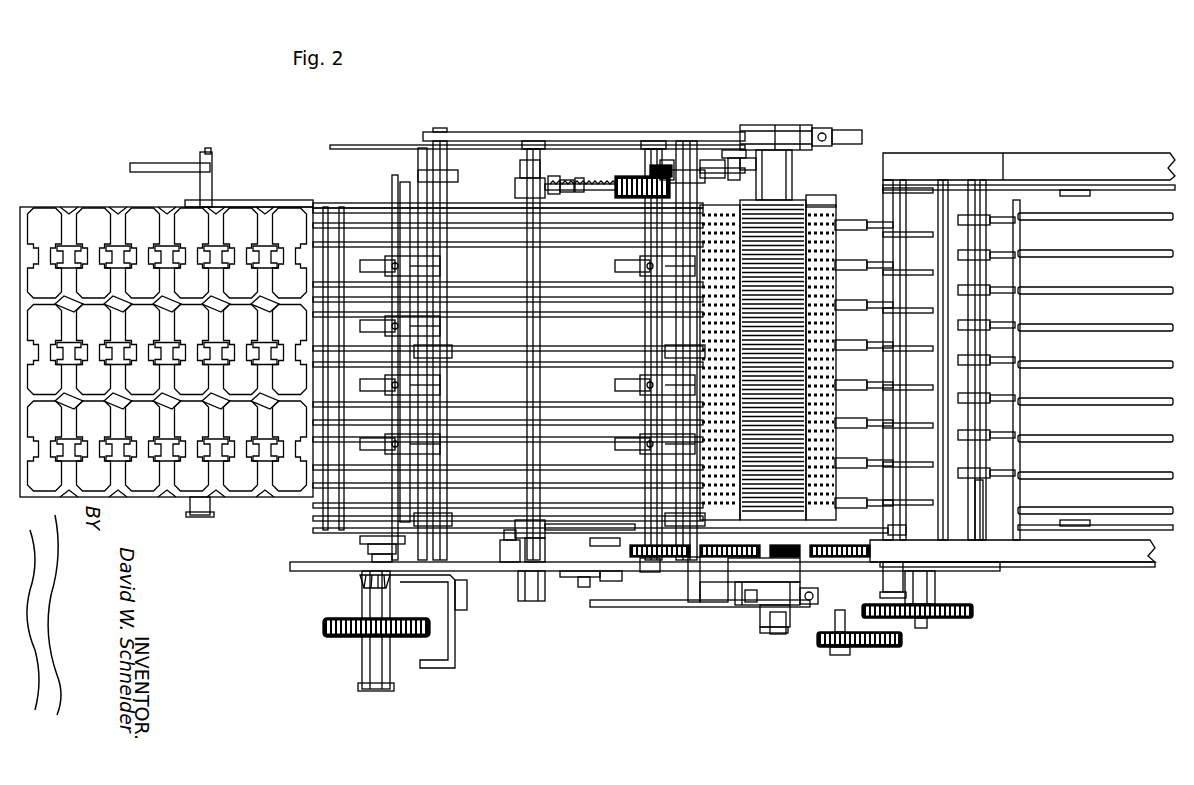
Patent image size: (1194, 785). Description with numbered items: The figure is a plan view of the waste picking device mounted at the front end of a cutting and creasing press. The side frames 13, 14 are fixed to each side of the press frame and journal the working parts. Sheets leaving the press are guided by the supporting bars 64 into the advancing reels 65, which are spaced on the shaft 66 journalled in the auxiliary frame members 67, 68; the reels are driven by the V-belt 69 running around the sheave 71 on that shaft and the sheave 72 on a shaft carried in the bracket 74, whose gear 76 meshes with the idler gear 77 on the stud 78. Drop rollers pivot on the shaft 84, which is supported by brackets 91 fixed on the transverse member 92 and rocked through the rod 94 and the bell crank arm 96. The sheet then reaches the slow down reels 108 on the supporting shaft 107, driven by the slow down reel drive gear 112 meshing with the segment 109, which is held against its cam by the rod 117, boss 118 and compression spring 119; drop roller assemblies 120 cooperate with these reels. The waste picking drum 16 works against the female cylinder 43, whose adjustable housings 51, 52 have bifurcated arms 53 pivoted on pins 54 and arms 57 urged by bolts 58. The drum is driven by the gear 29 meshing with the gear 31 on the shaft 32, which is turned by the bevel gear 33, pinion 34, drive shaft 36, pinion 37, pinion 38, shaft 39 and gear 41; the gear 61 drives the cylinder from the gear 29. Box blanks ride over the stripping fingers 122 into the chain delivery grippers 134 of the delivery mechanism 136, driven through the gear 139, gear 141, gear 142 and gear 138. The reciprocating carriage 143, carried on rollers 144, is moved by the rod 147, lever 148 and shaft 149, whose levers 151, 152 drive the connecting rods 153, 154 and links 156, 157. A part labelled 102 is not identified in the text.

The side frame 13 is at (332, 563).
The side frame 14 is at (478, 132).
The waste picking drum 16 is at (815, 215).
The gear 29 is at (694, 600).
The gear 31 is at (886, 551).
The shaft 32 is at (852, 650).
The bevel gear 33 is at (780, 634).
The pinion 34 is at (772, 634).
The drive shaft 36 is at (698, 604).
The pinion 37 is at (440, 616).
The pinion 38 is at (360, 584).
The shaft 39 is at (358, 604).
The gear 41 is at (332, 640).
The female cylinder 43 is at (838, 198).
The adjustable housing 51 is at (752, 608).
The adjustable housing 52 is at (790, 126).
The bifurcated arms 53 is at (745, 130).
The pins 54 is at (762, 128).
The arms 57 is at (824, 130).
The bolts 58 is at (838, 200).
The gear 61 is at (765, 628).
The supporting bars 64 is at (468, 366).
The advancing reels 65 is at (338, 266).
The shaft 66 is at (392, 205).
The auxiliary frame member 67 is at (278, 500).
The auxiliary frame member 68 is at (300, 204).
The V-belt 69 is at (543, 548).
The sheave 71 is at (378, 538).
The sheave 72 is at (630, 551).
The bracket 74 is at (700, 556).
The gear 76 is at (625, 582).
The idler gear 77 is at (588, 588).
The stud 78 is at (652, 572).
The shaft 84 is at (418, 192).
The brackets 91 is at (420, 180).
The transverse member 92 is at (442, 268).
The rod 94 is at (616, 180).
The arm 96 is at (734, 158).
The bracket 102 is at (712, 160).
The supporting shaft 107 is at (615, 442).
The slow down reels 108 is at (615, 266).
The segment 109 is at (656, 166).
The slow down reel drive gear 112 is at (666, 160).
The rod 117 is at (555, 176).
The boss 118 is at (566, 180).
The compression spring 119 is at (579, 178).
The drop roller assemblies 120 is at (615, 385).
The stripping fingers 122 is at (888, 325).
The chain delivery grippers 134 is at (985, 520).
The delivery mechanism 136 is at (1100, 562).
The gear 138 is at (960, 619).
The gear 139 is at (850, 655).
The gear 141 is at (906, 625).
The gear 142 is at (905, 619).
The reciprocating carriage 143 is at (1050, 400).
The rollers 144 is at (1085, 190).
The rod 147 is at (662, 608).
The lever 148 is at (545, 602).
The shaft 149 is at (504, 550).
The lever 151 is at (540, 528).
The lever 152 is at (515, 184).
The connecting rod 153 is at (600, 540).
The connecting rod 154 is at (560, 184).
The link 156 is at (900, 527).
The link 157 is at (916, 195).